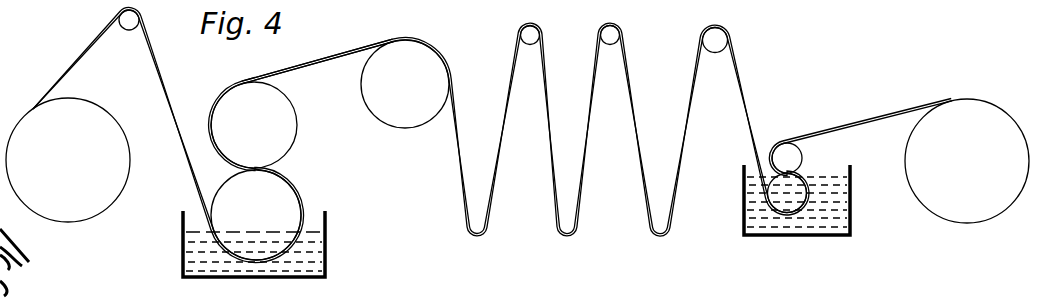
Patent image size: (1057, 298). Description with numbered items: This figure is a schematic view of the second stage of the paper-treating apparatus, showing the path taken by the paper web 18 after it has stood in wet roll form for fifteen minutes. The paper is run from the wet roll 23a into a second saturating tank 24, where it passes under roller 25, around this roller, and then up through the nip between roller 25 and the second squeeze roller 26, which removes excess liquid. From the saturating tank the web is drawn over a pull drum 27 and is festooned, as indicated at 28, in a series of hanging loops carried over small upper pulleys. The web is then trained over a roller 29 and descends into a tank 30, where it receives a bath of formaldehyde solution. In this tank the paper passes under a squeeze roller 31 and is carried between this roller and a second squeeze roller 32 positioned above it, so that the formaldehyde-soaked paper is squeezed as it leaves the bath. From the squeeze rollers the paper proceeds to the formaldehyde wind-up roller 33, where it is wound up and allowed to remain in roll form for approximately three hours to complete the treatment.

The paper web 18 is at (305, 63).
The wet roll 23a is at (80, 212).
The second saturating tank 24 is at (330, 243).
The roller 25 is at (282, 197).
The second squeeze roller 26 is at (288, 138).
The pull drum 27 is at (398, 123).
The festoon 28 is at (547, 105).
The roller 29 is at (717, 43).
The tank 30 is at (747, 212).
The squeeze roller 31 is at (780, 193).
The second squeeze roller 32 is at (785, 147).
The formaldehyde wind-up roller 33 is at (985, 217).